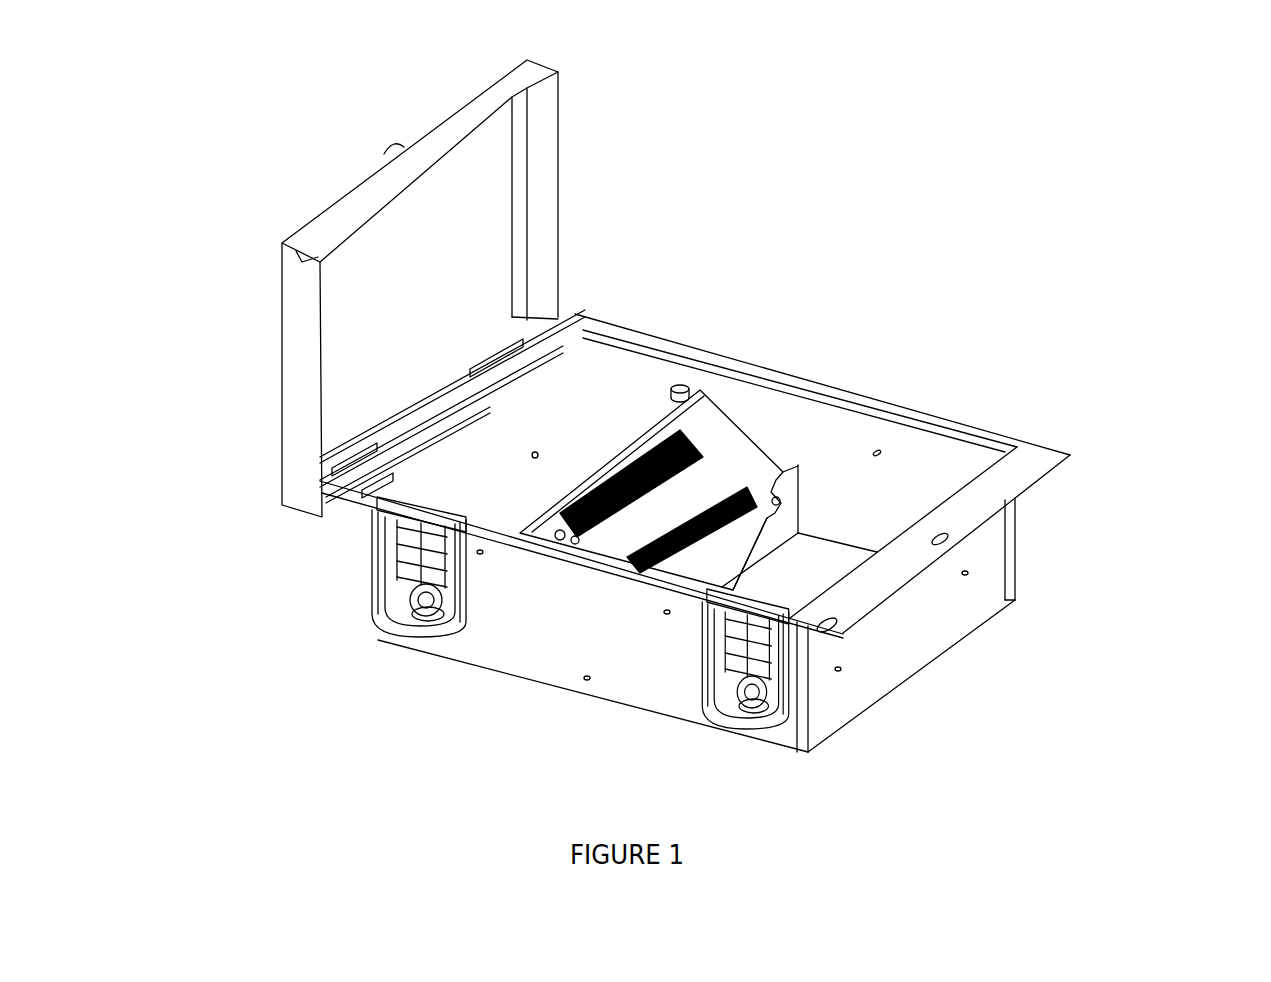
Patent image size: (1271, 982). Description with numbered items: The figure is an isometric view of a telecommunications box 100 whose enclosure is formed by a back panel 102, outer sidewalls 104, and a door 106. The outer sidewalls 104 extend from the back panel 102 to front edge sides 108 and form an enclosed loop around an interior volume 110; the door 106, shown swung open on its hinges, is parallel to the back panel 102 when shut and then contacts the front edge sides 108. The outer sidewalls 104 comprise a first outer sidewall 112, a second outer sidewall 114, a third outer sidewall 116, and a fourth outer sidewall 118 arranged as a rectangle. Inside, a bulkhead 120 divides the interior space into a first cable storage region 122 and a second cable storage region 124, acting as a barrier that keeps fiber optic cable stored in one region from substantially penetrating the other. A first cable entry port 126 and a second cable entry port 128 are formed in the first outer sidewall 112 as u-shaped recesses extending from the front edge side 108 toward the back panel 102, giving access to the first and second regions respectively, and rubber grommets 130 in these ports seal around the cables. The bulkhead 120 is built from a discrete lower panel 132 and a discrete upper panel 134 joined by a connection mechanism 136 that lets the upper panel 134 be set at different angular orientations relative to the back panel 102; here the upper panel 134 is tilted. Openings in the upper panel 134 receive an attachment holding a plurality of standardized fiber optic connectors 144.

The telecommunications box 100 is at (180, 125).
The back panel 102 is at (778, 592).
The outer sidewalls 104 is at (855, 687).
The door 106 is at (280, 358).
The front edge sides 108 is at (698, 353).
The interior volume 110 is at (877, 522).
The first outer sidewall 112 is at (508, 635).
The second outer sidewall 114 is at (905, 459).
The third outer sidewall 116 is at (460, 493).
The fourth outer sidewall 118 is at (893, 647).
The bulkhead 120 is at (773, 415).
The first cable storage region 122 is at (567, 440).
The second cable storage region 124 is at (835, 503).
The first cable entry port 126 is at (383, 568).
The second cable entry port 128 is at (700, 653).
The rubber grommets 130 is at (420, 620).
The lower panel 132 is at (745, 554).
The upper panel 134 is at (651, 487).
The connection mechanism 136 is at (783, 503).
The fiber optic connectors 144 is at (570, 503).